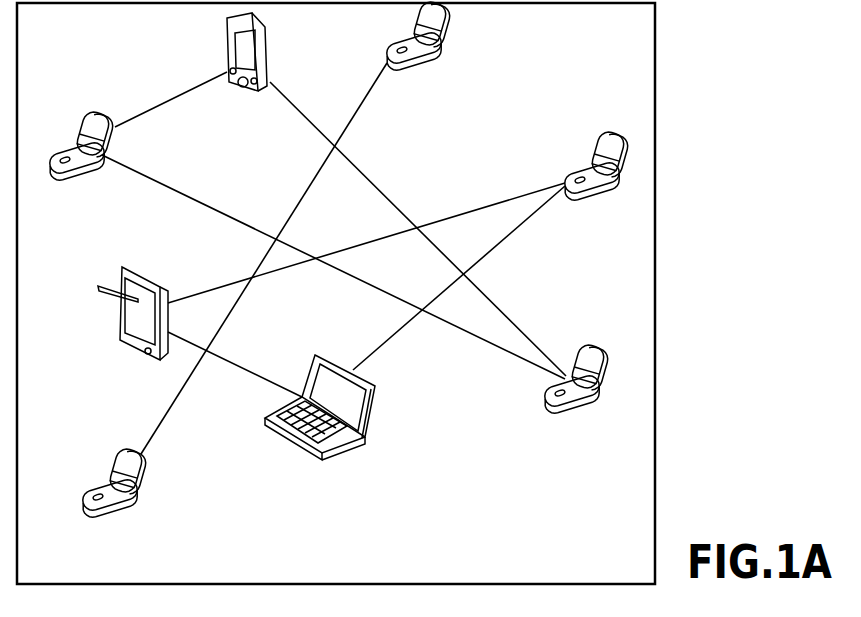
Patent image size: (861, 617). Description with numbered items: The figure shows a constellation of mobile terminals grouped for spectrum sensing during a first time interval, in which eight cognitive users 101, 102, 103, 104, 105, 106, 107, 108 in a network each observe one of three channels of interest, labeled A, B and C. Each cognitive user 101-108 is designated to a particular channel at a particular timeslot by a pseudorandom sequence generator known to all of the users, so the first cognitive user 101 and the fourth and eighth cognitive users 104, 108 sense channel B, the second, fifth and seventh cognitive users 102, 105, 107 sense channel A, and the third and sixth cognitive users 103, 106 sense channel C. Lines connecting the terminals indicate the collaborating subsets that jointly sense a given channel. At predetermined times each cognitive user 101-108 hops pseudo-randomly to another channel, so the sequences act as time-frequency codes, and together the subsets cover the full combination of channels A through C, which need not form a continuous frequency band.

The cognitive user 101 is at (99, 176).
The cognitive user 102 is at (102, 342).
The cognitive user 103 is at (104, 511).
The cognitive user 104 is at (242, 83).
The cognitive user 105 is at (328, 440).
The cognitive user 106 is at (434, 65).
The cognitive user 107 is at (582, 195).
The cognitive user 108 is at (572, 409).